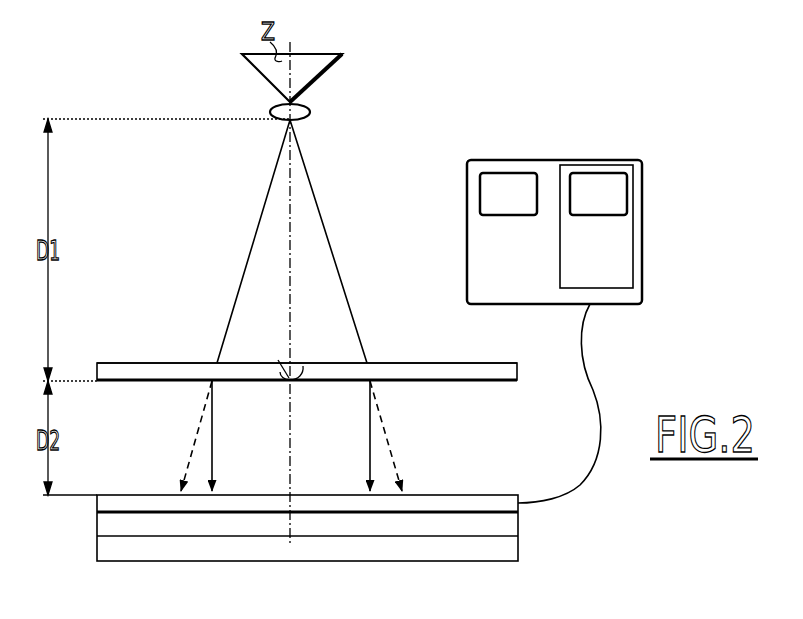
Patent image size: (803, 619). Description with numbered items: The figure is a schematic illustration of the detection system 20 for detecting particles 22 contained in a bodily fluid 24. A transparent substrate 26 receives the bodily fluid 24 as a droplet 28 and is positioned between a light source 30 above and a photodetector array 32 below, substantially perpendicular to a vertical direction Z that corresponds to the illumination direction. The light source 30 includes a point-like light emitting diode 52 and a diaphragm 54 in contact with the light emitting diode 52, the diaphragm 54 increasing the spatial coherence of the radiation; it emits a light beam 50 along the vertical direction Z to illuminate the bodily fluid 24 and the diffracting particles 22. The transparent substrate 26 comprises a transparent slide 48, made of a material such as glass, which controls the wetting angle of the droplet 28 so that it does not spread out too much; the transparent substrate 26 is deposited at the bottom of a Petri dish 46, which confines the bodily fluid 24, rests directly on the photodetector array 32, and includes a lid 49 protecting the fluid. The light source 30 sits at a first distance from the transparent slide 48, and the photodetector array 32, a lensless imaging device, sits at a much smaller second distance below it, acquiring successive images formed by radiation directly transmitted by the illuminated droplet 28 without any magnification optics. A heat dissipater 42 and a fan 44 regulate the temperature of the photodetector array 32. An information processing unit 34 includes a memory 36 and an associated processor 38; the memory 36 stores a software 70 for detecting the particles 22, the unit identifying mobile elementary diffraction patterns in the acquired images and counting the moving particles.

The detection system 20 is at (492, 100).
The particles 22 is at (278, 360).
The bodily fluid 24 is at (293, 390).
The transparent substrate 26 is at (449, 388).
The droplet 28 is at (303, 366).
The light source 30 is at (374, 87).
The photodetector array 32 is at (452, 498).
The information processing unit 34 is at (553, 160).
The memory 36 is at (560, 250).
The processor 38 is at (518, 208).
The heat dissipater 42 is at (500, 522).
The fan 44 is at (500, 548).
The Petri dish 46 is at (505, 372).
The transparent slide 48 is at (262, 382).
The lid 49 is at (443, 363).
The light beam 50 is at (331, 243).
The light emitting diode 52 is at (312, 76).
The diaphragm 54 is at (302, 108).
The software 70 is at (608, 208).